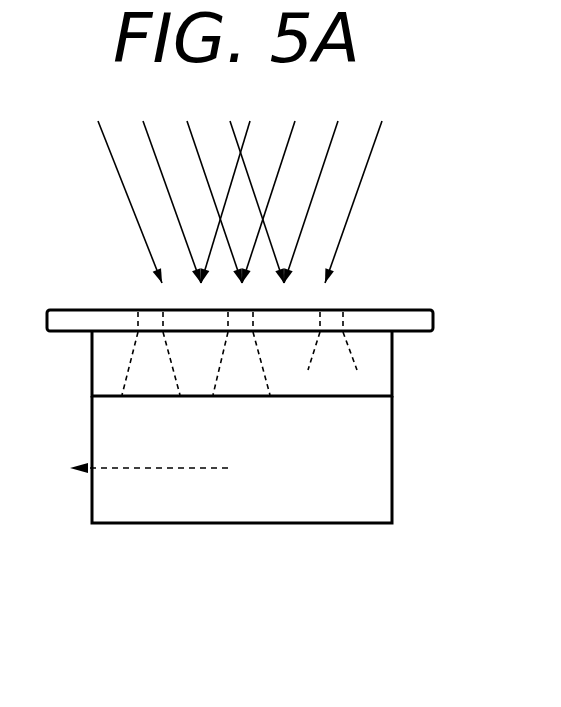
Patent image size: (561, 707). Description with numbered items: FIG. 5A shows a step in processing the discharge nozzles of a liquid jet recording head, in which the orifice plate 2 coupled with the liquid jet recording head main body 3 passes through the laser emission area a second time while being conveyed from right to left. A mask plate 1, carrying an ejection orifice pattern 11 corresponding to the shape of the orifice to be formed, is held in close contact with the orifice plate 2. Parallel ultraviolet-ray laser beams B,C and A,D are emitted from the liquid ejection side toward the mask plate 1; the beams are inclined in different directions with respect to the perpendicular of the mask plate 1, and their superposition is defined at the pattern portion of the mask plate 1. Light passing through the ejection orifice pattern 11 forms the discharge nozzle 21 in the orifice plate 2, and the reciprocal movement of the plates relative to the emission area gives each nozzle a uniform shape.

The mask plate 1 is at (420, 317).
The ejection orifice forming plate 2 is at (378, 348).
The liquid jet recording head main body 3 is at (368, 497).
The ejection orifice pattern 11 is at (330, 320).
The discharge nozzle 21 is at (143, 357).
The ultraviolet-ray laser beams B and C B,C is at (170, 142).
The ultraviolet-ray laser beams A and D A,D is at (307, 142).